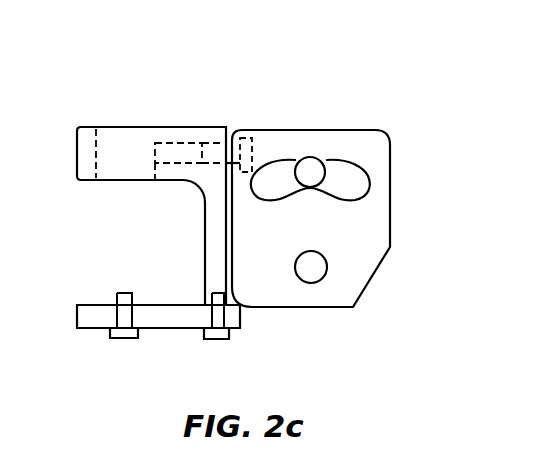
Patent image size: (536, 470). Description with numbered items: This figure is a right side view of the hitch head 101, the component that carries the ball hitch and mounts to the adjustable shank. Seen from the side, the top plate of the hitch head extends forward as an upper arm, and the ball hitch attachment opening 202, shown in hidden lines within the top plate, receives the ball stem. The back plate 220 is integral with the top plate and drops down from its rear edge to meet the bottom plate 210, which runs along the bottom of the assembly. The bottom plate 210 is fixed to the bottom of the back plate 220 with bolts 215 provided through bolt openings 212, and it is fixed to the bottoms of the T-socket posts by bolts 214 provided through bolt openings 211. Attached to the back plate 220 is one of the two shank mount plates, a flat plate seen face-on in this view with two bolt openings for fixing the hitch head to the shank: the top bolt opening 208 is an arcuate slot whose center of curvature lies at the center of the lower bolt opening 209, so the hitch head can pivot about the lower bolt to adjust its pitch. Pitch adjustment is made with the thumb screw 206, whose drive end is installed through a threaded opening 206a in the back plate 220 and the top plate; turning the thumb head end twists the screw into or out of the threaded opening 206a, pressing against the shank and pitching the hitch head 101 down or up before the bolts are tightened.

The hitch head 101 is at (203, 98).
The ball hitch attachment opening 202 is at (120, 143).
The thumb screw 206 is at (243, 147).
The threaded opening 206a is at (178, 155).
The top bolt opening 208 is at (317, 162).
The lower bolt opening 209 is at (315, 270).
The bottom plate 210 is at (158, 330).
The bolt openings 211 is at (117, 340).
The bolt openings 212 is at (217, 342).
The bolts 214 is at (126, 340).
The bolts 215 is at (215, 340).
The back plate 220 is at (212, 223).